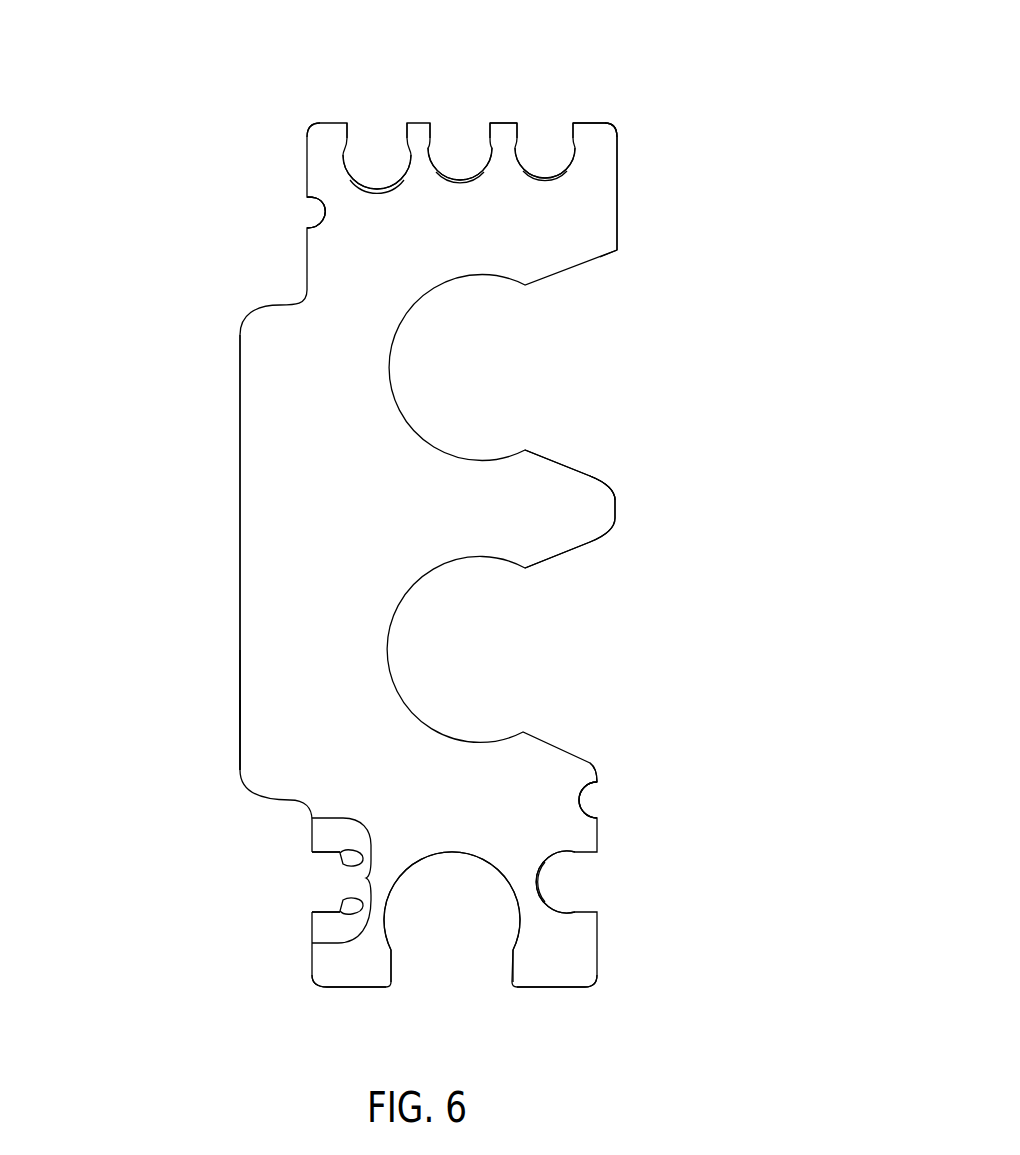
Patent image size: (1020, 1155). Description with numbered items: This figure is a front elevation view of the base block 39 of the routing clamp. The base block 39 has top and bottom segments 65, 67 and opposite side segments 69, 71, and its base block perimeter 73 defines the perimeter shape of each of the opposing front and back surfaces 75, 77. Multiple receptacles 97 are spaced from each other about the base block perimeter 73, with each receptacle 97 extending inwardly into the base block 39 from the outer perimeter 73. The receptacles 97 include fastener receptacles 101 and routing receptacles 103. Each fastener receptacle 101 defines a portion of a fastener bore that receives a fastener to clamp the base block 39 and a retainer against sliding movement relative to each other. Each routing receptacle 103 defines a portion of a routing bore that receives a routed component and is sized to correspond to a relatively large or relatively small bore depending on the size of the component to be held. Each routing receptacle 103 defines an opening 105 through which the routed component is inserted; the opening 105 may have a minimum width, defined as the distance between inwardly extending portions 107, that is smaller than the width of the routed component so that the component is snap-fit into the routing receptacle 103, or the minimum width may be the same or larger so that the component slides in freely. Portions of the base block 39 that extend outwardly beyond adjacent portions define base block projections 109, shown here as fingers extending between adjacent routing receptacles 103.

The base block 39 is at (185, 262).
The top segment 65 is at (503, 118).
The bottom segment 67 is at (372, 1003).
The side segment 69 is at (228, 522).
The side segment 71 is at (632, 497).
The base block perimeter 73 is at (620, 122).
The front surface 75 is at (273, 732).
The back surface 77 is at (275, 680).
The receptacle 97 is at (470, 140).
The fastener receptacle 101 is at (320, 212).
The routing receptacle 103 is at (445, 163).
The opening 105 is at (383, 158).
The inwardly extending portion 107 is at (349, 135).
The base block projection 109 is at (305, 124).